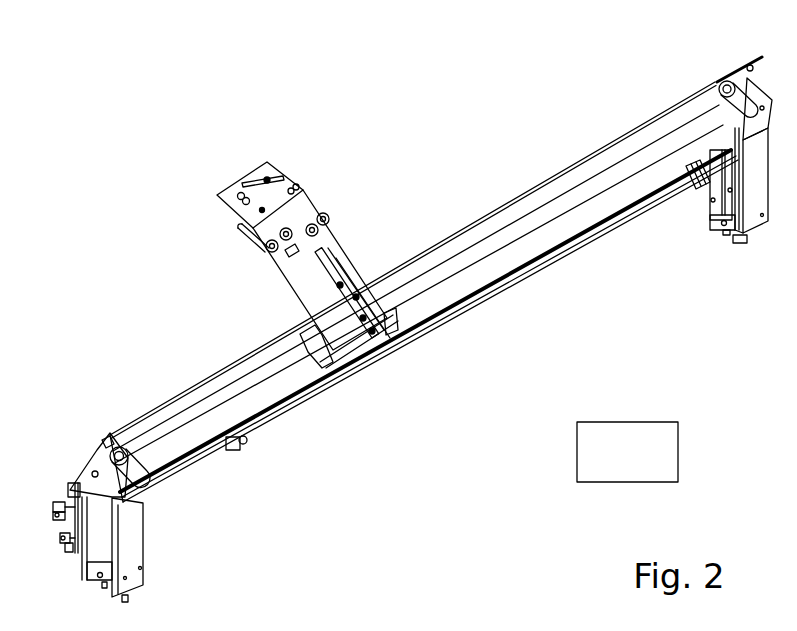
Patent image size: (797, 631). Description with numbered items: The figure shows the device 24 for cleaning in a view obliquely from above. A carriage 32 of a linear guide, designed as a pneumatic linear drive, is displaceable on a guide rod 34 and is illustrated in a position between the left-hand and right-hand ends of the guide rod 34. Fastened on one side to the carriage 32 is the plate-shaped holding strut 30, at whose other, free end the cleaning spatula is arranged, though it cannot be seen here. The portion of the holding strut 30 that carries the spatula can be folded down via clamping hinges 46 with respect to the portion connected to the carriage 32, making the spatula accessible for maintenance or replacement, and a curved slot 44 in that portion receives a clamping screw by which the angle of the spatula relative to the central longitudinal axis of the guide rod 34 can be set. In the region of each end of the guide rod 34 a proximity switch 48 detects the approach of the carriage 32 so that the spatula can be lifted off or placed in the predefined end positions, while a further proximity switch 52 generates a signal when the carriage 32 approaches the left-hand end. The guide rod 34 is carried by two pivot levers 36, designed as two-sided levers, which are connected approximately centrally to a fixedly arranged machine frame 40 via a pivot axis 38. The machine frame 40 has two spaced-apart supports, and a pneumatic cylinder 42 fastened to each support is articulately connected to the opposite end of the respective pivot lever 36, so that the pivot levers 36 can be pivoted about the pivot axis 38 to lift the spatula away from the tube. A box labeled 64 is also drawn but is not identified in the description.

The device for cleaning 24 is at (445, 200).
The holding strut 30 is at (343, 267).
The carriage 32 is at (393, 303).
The guide rod 34 is at (518, 227).
The pivot lever 36 is at (86, 466).
The pivot axis 38 is at (110, 433).
The machine frame 40 is at (132, 548).
The pneumatic cylinder 42 is at (65, 507).
The curved slot 44 is at (278, 183).
The clamping hinges 46 is at (265, 252).
The proximity switch 48 is at (147, 473).
The further proximity switch 52 is at (243, 440).
The control unit 64 is at (610, 464).